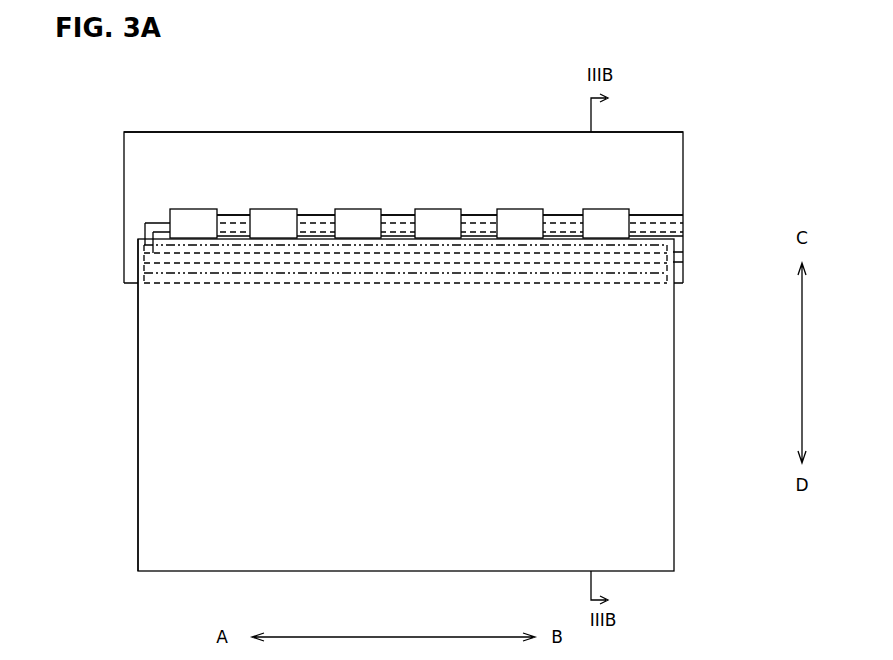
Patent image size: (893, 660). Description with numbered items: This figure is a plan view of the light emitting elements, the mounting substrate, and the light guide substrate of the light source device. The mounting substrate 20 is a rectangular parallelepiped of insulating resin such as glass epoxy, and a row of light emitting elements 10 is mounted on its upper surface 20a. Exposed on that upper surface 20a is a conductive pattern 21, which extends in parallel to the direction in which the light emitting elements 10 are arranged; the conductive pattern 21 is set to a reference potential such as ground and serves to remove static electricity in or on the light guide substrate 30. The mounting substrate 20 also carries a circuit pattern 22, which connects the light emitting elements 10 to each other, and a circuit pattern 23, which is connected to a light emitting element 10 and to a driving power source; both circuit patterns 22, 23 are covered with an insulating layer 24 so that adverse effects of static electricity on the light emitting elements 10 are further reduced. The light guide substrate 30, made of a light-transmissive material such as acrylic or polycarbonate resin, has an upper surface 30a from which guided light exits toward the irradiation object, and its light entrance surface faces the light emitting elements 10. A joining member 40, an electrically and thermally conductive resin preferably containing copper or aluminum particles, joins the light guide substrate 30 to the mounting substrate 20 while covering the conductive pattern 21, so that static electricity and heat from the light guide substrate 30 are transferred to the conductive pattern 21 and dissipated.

The light emitting elements 10 is at (275, 210).
The mounting substrate 20 is at (393, 132).
The upper surface 20a is at (190, 145).
The conductive pattern 21 is at (135, 262).
The circuit pattern 22 is at (233, 227).
The circuit pattern 23 is at (663, 218).
The insulating layer 24 is at (482, 215).
The light guide substrate 30 is at (138, 493).
The upper surface 30a is at (138, 420).
The joining member 40 is at (323, 278).